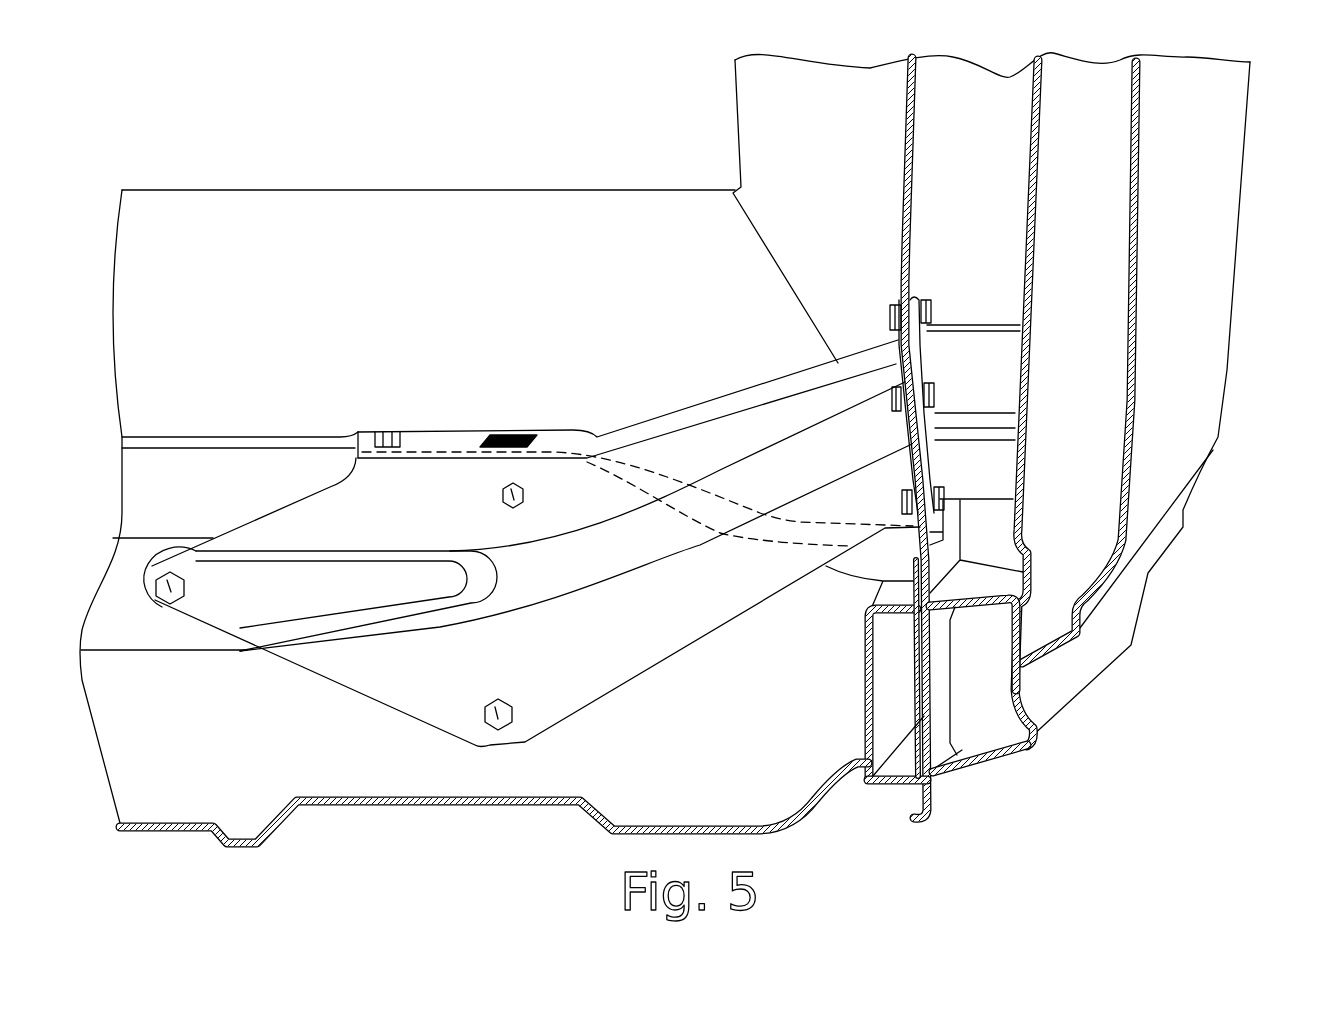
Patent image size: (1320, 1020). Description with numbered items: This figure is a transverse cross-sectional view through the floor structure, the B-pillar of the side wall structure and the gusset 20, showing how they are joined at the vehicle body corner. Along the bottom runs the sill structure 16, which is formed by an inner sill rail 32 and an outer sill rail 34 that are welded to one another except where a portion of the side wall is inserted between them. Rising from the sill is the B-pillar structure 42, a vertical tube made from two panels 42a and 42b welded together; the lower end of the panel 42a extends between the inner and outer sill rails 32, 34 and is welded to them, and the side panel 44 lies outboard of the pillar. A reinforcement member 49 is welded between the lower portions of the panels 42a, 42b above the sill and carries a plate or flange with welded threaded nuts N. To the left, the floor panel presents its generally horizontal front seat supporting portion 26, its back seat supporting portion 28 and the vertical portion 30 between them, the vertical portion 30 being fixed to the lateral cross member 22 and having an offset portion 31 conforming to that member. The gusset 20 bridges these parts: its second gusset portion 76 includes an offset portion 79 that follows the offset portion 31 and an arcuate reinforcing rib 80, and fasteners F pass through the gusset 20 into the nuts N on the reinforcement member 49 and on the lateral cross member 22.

The sill structure 16 is at (966, 768).
The gusset 20 is at (660, 420).
The lateral cross member 22 is at (778, 521).
The front seat supporting portion 26 is at (440, 807).
The back seat supporting portion 28 is at (272, 262).
The vertical portion 30 is at (363, 780).
The offset portion 31 is at (122, 620).
The inner sill rail 32 is at (867, 688).
The outer sill rail 34 is at (1013, 673).
The B-pillar structure 42 is at (975, 438).
The panel 42a is at (918, 176).
The panel 42b is at (1026, 165).
The side panel 44 is at (1214, 282).
The reinforcement member 49 is at (993, 352).
The second gusset portion 76 is at (603, 633).
The offset portion 79 is at (290, 594).
The reinforcing rib 80 is at (600, 570).
The fastener F is at (390, 432).
The nut N is at (931, 303).